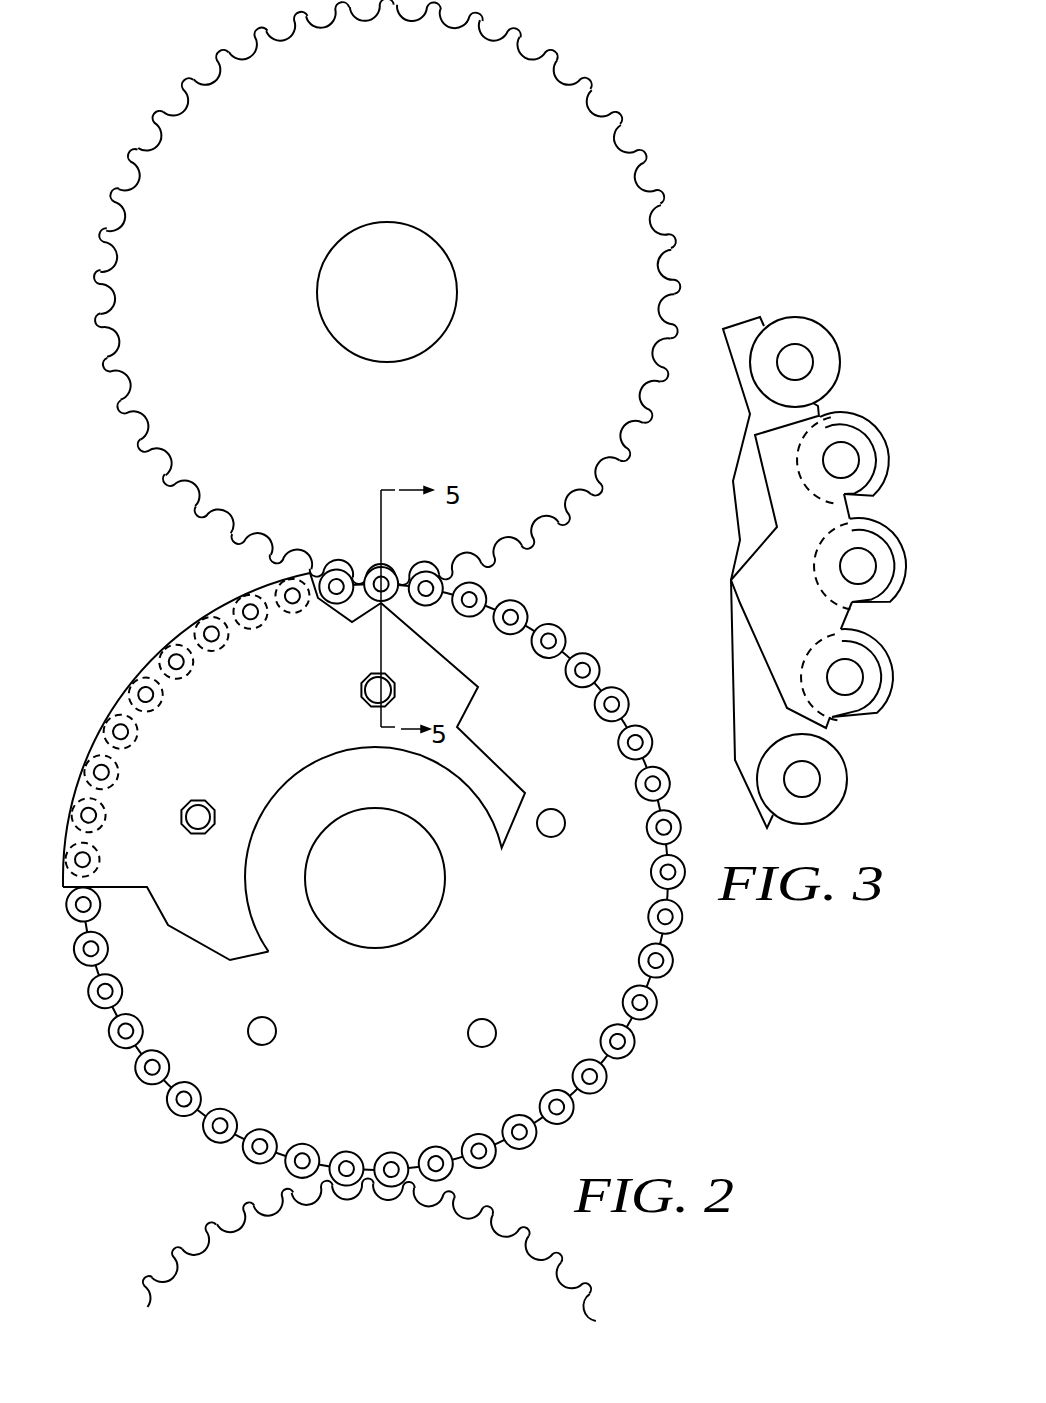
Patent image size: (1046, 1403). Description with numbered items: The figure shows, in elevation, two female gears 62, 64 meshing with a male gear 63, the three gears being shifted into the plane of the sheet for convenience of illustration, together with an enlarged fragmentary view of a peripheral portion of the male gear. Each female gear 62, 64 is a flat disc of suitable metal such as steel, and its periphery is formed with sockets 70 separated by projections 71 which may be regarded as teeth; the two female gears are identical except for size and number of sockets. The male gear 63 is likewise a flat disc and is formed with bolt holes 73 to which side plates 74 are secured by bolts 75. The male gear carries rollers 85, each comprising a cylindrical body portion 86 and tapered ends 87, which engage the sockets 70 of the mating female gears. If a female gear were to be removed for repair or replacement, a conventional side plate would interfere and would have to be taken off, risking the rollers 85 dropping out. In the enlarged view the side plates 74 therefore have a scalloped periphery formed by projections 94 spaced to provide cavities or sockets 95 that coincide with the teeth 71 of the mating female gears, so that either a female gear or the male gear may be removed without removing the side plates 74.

In FIG. 2, the female gear 62 is at (412, 1283).
In FIG. 2, the male gear 63 is at (525, 952).
In FIG. 3, the male gear 63 is at (748, 494).
In FIG. 2, the female gear 64 is at (535, 397).
In FIG. 2, the sockets 70 is at (597, 107).
In FIG. 2, the projections 71 is at (639, 155).
In FIG. 3, the projections 71 is at (819, 411).
In FIG. 2, the bolt holes 73 is at (556, 809).
In FIG. 2, the side plates 74 is at (275, 712).
In FIG. 3, the side plates 74 is at (783, 596).
In FIG. 2, the bolts 75 is at (207, 800).
In FIG. 2, the rollers 85 is at (564, 618).
In FIG. 3, the rollers 85 is at (836, 312).
In FIG. 3, the cylindrical body portion 86 is at (845, 791).
In FIG. 3, the tapered ends 87 is at (848, 675).
In FIG. 3, the projections 94 is at (869, 452).
In FIG. 3, the sockets 95 is at (862, 496).